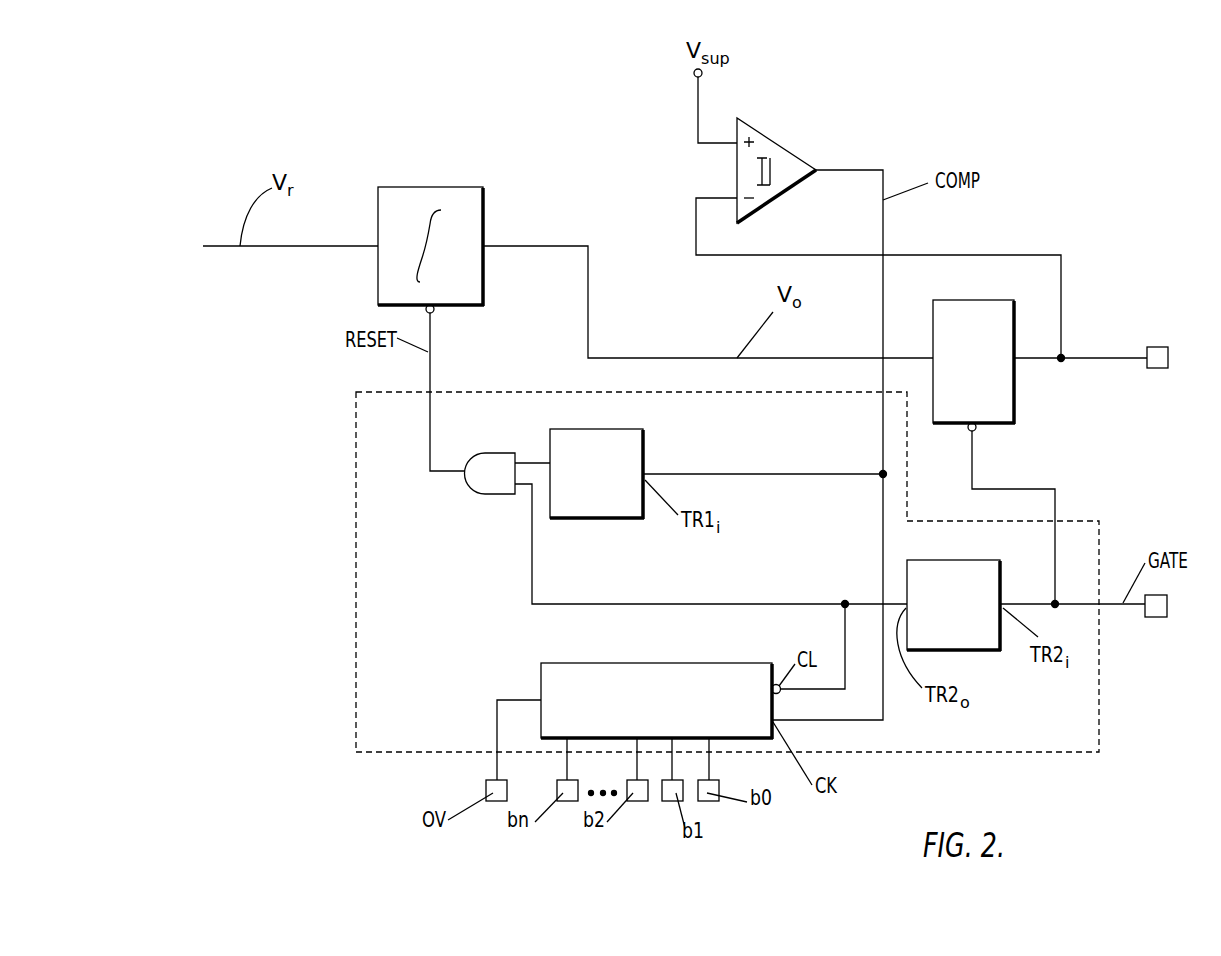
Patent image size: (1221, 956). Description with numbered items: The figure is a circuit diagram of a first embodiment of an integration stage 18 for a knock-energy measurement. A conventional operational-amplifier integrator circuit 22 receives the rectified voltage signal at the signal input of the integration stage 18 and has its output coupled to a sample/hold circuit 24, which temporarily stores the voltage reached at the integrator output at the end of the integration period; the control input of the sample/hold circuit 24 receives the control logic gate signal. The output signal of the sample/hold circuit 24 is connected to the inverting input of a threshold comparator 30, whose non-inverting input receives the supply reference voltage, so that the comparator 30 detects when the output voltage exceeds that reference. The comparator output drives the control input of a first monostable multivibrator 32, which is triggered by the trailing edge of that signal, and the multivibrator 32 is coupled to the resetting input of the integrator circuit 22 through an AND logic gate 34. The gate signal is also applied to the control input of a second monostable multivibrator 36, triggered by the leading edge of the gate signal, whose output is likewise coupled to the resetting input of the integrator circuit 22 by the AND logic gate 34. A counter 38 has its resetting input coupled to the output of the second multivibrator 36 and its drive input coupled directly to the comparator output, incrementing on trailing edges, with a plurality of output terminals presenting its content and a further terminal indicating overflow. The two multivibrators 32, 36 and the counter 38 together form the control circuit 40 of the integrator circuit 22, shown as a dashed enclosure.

The integration stage 18 is at (1137, 232).
The integrator circuit 22 is at (411, 186).
The sample/hold circuit 24 is at (1015, 397).
The threshold comparator 30 is at (773, 140).
The first monostable multivibrator 32 is at (628, 437).
The AND logic gate 34 is at (478, 482).
The second monostable multivibrator 36 is at (992, 565).
The counter 38 is at (655, 672).
The control circuit 40 is at (354, 545).